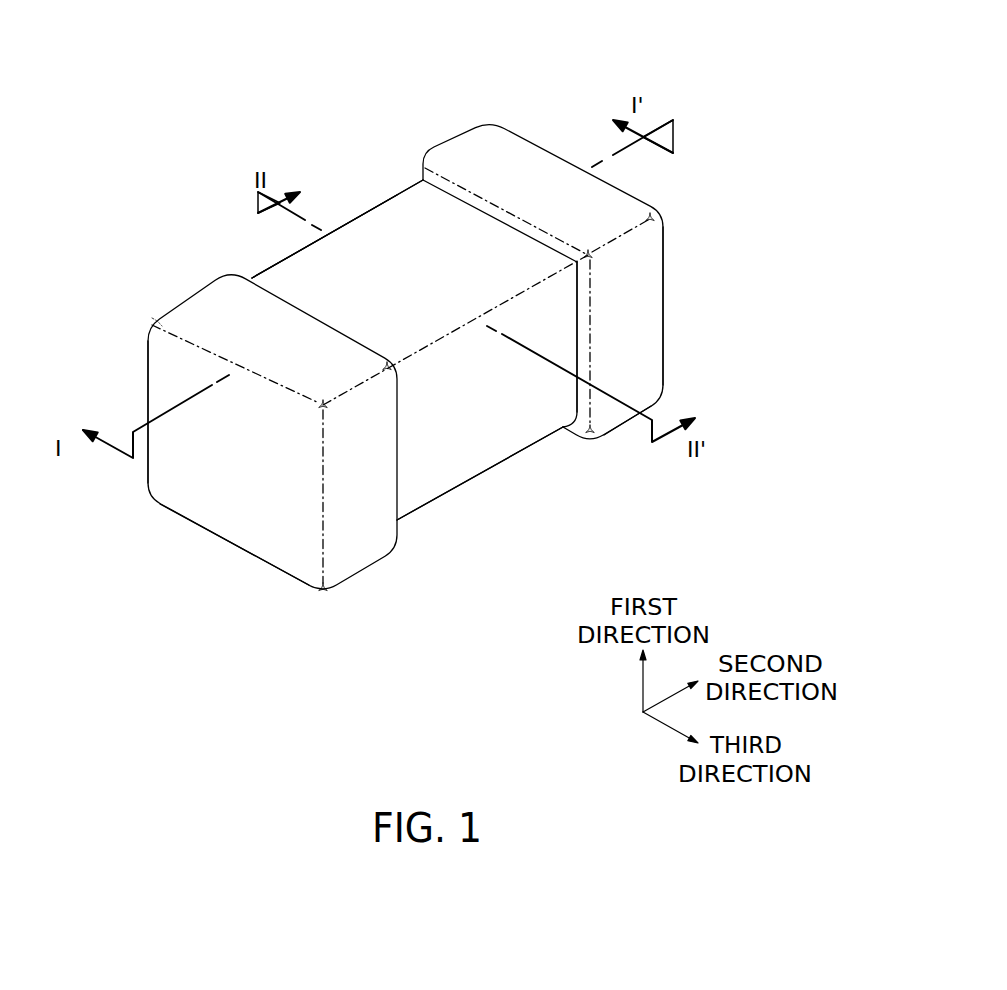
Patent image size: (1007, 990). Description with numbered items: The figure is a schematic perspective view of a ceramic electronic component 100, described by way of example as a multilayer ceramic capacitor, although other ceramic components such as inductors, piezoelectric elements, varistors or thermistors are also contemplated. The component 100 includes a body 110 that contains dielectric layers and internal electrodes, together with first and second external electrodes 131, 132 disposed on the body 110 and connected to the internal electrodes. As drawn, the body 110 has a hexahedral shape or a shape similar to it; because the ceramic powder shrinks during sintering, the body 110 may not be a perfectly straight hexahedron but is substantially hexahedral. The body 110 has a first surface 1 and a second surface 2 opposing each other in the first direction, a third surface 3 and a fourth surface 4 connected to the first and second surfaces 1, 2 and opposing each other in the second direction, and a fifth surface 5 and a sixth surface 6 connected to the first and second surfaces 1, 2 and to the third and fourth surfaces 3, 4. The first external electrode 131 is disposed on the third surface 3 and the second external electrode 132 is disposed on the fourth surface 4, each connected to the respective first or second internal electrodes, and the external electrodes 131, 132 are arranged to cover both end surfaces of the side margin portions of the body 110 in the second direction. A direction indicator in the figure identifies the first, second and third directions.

The ceramic electronic component 100 is at (192, 89).
The body 110 is at (285, 288).
The first surface 1 is at (448, 443).
The second surface 2 is at (420, 240).
The third surface 3 is at (244, 488).
The fourth surface 4 is at (613, 295).
The fifth surface 5 is at (367, 259).
The sixth surface 6 is at (507, 413).
The first external electrode 131 is at (207, 302).
The second external electrode 132 is at (463, 155).